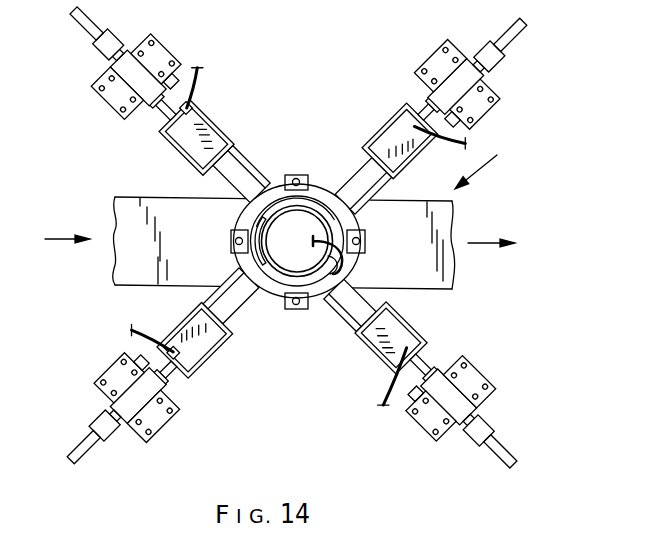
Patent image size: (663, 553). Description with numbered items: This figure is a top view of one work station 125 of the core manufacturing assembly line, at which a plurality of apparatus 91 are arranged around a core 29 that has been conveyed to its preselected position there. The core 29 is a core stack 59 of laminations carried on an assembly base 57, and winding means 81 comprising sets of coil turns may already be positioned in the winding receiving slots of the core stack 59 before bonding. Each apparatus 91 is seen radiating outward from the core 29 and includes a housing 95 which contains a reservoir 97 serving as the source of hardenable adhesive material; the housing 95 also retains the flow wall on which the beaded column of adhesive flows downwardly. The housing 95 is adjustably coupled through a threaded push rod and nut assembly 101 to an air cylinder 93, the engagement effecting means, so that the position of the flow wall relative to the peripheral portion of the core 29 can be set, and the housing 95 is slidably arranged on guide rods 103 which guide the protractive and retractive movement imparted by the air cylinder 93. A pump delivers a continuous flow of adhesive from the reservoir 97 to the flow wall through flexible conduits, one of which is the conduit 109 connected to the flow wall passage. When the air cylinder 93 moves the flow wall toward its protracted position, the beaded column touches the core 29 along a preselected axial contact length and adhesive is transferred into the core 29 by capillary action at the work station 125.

The core 29 is at (350, 102).
The assembly base 57 is at (366, 245).
The core stack 59 is at (358, 212).
The winding means 81 is at (278, 188).
The apparatus 91 is at (98, 78).
The air cylinder 93 is at (138, 404).
The housing 95 is at (229, 341).
The reservoir 97 is at (210, 361).
The threaded push rod and nut assembly 101 is at (181, 384).
The guide rods 103 is at (213, 293).
The flexible conduit 109 is at (150, 336).
The work station 125 is at (538, 156).